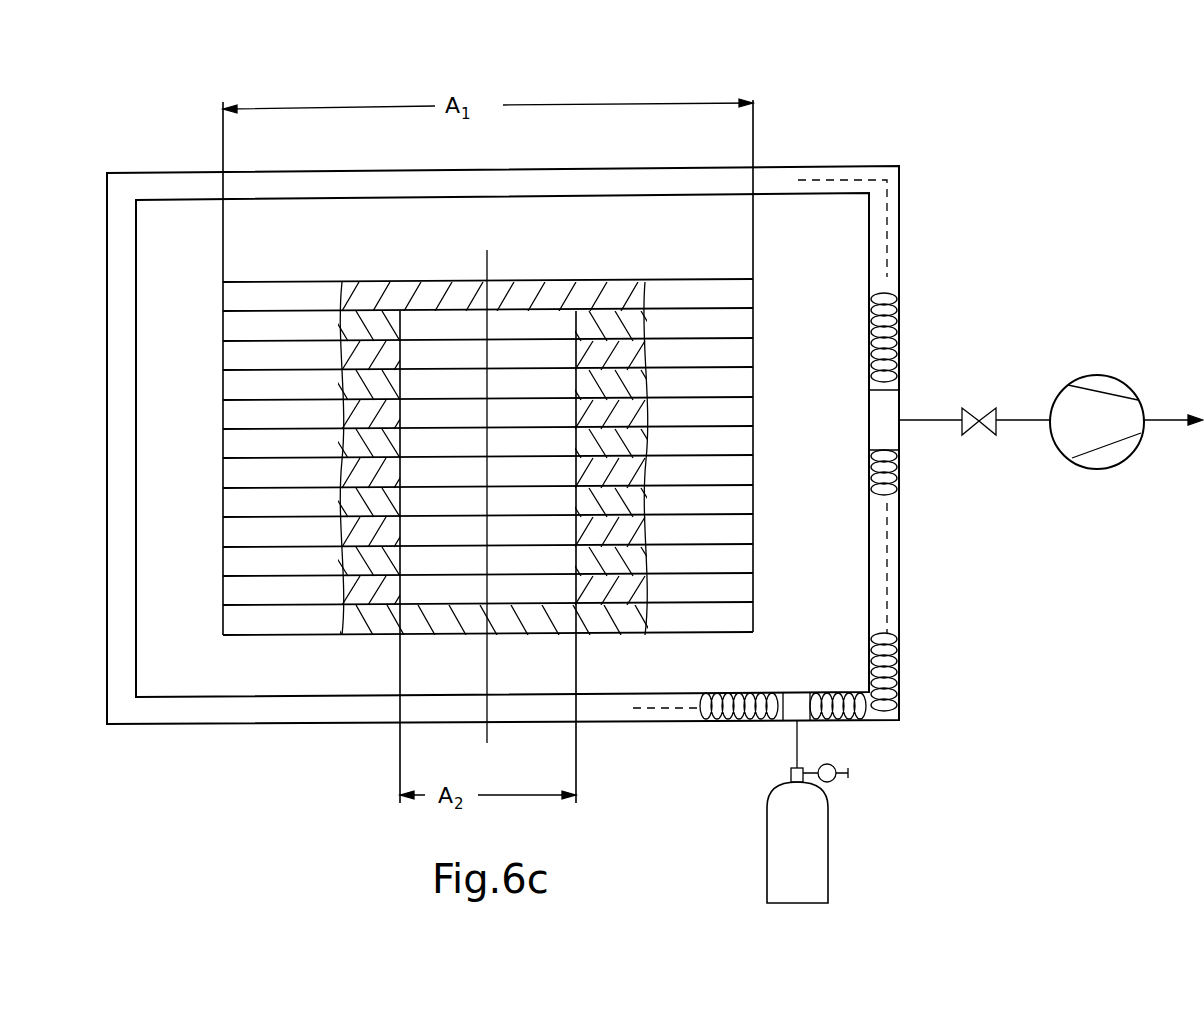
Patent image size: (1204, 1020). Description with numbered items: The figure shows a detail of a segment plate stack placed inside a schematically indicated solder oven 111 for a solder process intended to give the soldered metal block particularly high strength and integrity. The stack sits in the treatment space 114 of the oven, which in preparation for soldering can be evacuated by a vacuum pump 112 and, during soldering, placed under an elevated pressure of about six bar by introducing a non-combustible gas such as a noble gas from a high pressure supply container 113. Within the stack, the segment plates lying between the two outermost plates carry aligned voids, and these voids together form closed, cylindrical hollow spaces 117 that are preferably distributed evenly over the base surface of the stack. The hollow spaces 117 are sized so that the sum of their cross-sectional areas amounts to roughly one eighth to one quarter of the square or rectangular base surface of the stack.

The cylindrical hollow space 117 is at (537, 327).
The solder oven 111 is at (858, 163).
The vacuum pump 112 is at (1100, 385).
The high pressure supply container 113 is at (810, 852).
The treatment space 114 is at (833, 537).